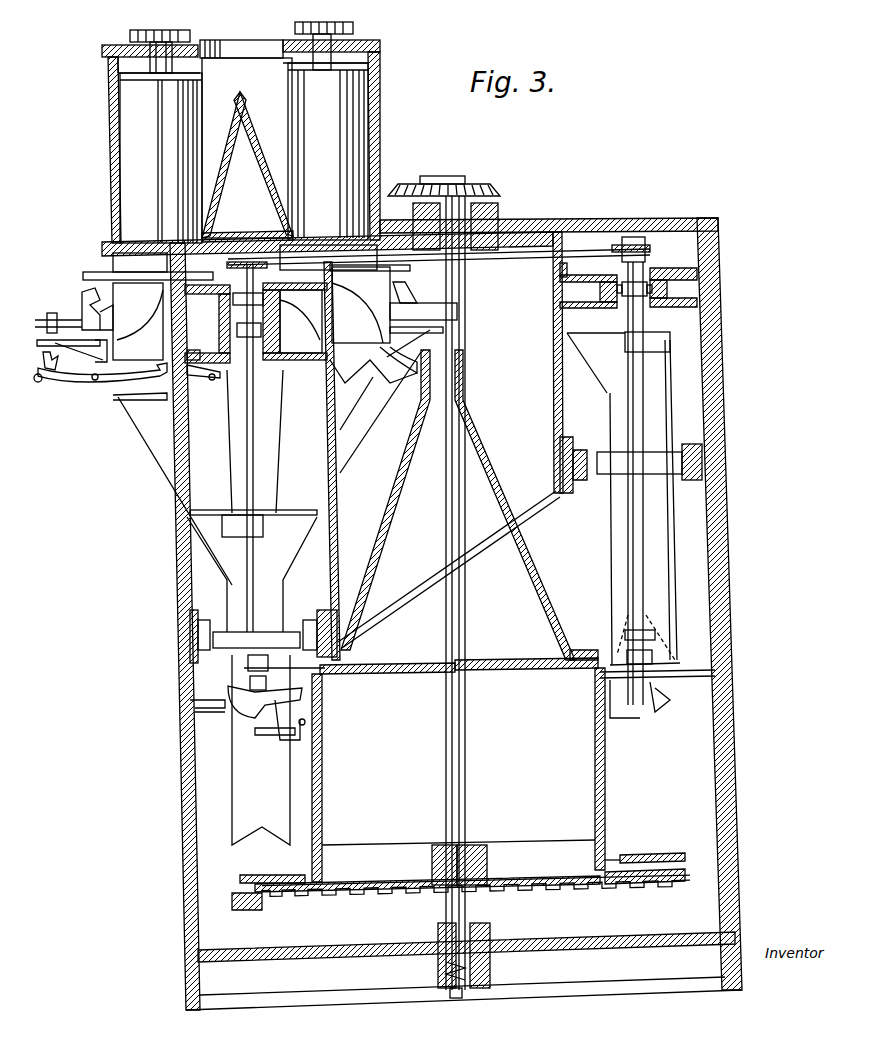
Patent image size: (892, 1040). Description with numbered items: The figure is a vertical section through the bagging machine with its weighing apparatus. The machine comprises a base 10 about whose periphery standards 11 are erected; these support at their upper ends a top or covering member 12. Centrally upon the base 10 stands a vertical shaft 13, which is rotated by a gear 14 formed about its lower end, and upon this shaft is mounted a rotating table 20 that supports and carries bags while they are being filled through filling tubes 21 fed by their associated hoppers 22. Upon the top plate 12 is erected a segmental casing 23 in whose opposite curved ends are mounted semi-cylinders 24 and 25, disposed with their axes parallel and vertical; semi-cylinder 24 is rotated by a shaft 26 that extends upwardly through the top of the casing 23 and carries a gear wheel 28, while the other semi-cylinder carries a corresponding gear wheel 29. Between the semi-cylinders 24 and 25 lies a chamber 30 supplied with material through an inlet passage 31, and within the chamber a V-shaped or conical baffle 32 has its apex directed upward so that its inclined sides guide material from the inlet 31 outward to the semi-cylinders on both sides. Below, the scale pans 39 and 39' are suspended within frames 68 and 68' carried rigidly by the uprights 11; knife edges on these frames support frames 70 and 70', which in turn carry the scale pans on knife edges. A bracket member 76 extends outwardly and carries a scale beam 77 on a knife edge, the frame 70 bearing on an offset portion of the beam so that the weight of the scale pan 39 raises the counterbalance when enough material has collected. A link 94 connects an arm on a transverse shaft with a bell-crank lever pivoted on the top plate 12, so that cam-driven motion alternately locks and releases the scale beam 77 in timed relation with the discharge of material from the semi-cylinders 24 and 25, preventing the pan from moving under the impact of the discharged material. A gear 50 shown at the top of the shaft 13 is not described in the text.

The base 10 is at (187, 982).
The standards 11 is at (180, 782).
The top or covering member 12 is at (652, 226).
The shaft 13 is at (468, 732).
The gear 14 is at (552, 900).
The rotating table 20 is at (650, 846).
The filling tubes 21 is at (672, 568).
The hoppers 22 is at (323, 517).
The segmental casing 23 is at (380, 100).
The semi-cylinder 24 is at (345, 147).
The semi-cylinder 25 is at (170, 170).
The shaft 26 is at (340, 52).
The gear wheel 28 is at (324, 35).
The gear wheel 29 is at (160, 38).
The chamber 30 is at (247, 148).
The inlet passage 31 is at (242, 45).
The V-shaped or conical baffle 32 is at (232, 125).
The scale pan 39 is at (122, 321).
The scale pan 39' is at (374, 305).
The gear 50 is at (480, 192).
The frame 68 is at (95, 346).
The frame 68' is at (393, 366).
The frame 70 is at (148, 265).
The frame 70' is at (389, 270).
The bracket member 76 is at (90, 348).
The scale beam 77 is at (63, 318).
The link 94 is at (45, 352).